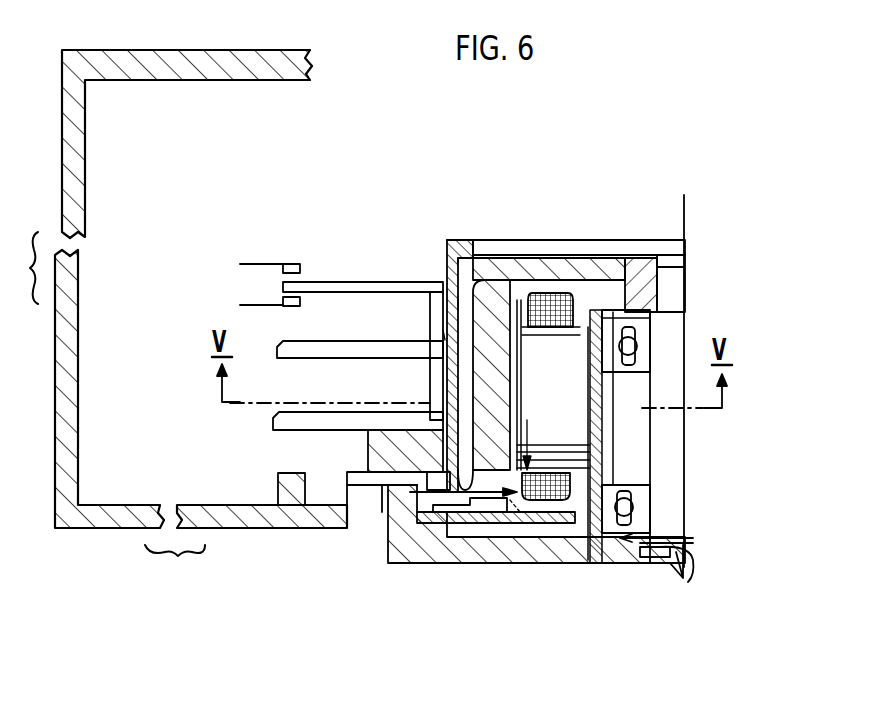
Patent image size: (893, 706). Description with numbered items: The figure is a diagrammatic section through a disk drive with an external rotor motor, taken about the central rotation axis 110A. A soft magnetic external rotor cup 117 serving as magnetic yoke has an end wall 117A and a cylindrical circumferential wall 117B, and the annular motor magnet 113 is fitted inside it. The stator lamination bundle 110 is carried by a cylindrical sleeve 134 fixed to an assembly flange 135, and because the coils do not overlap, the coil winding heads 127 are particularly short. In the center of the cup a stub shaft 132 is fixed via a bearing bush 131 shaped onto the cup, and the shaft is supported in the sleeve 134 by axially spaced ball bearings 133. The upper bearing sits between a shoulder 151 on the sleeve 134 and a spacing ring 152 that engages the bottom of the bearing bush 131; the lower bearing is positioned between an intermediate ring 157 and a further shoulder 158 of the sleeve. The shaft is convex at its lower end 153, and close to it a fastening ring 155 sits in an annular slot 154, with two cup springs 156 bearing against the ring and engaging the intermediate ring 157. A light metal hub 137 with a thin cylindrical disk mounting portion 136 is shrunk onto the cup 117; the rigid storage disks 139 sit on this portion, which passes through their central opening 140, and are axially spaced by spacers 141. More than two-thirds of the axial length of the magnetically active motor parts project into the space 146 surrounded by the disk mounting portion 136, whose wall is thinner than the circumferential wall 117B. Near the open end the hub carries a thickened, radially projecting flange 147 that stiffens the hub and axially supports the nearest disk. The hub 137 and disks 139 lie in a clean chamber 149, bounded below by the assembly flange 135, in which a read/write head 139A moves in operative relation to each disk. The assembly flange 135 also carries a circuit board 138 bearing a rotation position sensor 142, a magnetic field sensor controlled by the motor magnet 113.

The clean chamber 149 is at (272, 168).
The rigid storage disks 139 is at (335, 282).
The read/write head 139A is at (242, 285).
The spacers 141 is at (430, 386).
The motor magnet 113 is at (445, 333).
The flange 147 is at (368, 455).
The assembly flange 135 is at (276, 482).
The disk mounting portion 136 is at (447, 242).
The space 146 is at (473, 252).
The central opening 140 is at (445, 280).
The external rotor cup 117 is at (510, 270).
The cylindrical circumferential wall 117B is at (458, 300).
The end wall 117A is at (630, 265).
The bearing bush 131 is at (648, 287).
The central rotation axis 110A is at (690, 225).
The coil winding heads 127 is at (548, 300).
The ball bearings 133 is at (612, 528).
The cylindrical sleeve 134 is at (600, 450).
The stator lamination bundle 110 is at (650, 475).
The stub shaft 132 is at (667, 520).
The further shoulder 158 is at (655, 485).
The spacing ring 152 is at (643, 312).
The lower end 153 is at (647, 335).
The shoulder 151 is at (630, 425).
The intermediate ring 157 is at (652, 535).
The cup springs 156 is at (670, 548).
The fastening ring 155 is at (692, 548).
The annular slot 154 is at (683, 562).
The circuit board 138 is at (518, 524).
The rotation position sensor 142 is at (488, 506).
The hub 137 is at (374, 508).